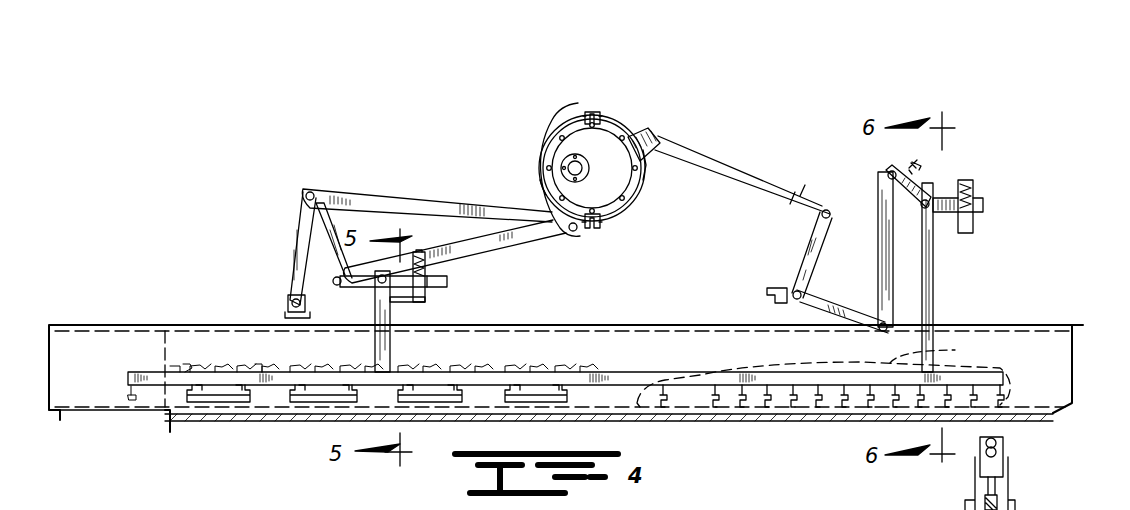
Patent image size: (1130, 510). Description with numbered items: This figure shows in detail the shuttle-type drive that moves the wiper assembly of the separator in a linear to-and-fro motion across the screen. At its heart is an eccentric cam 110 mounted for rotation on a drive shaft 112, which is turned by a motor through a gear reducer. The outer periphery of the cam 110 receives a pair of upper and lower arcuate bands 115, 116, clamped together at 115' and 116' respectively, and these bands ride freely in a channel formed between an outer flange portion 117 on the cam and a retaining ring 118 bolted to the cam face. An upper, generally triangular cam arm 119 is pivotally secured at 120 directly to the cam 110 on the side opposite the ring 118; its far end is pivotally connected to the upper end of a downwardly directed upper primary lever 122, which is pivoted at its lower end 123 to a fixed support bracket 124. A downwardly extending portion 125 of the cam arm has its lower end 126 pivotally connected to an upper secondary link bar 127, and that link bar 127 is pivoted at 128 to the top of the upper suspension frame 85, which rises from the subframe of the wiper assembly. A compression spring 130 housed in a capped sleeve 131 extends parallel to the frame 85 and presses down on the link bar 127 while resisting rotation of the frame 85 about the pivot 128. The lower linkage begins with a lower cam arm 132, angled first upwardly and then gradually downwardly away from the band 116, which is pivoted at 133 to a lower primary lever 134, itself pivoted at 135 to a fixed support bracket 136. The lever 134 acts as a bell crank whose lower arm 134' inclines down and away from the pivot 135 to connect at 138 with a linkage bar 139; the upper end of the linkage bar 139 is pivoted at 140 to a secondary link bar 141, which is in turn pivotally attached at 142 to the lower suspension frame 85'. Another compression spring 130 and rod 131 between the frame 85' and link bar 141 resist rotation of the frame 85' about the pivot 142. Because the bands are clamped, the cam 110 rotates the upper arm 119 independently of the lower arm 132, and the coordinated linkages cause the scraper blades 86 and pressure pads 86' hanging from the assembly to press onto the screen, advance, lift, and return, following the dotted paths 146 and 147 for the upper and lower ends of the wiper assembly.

The upper suspension frame 85 is at (565, 368).
The lower suspension frame 85' is at (967, 231).
The scraper blades 86 is at (832, 418).
The pressure pads 86' is at (377, 417).
The eccentric cam 110 is at (640, 205).
The drive shaft 112 is at (570, 168).
The upper arcuate band 115 is at (513, 183).
The clamp of upper band 115' is at (620, 101).
The lower arcuate band 116 is at (669, 174).
The clamp of lower band 116' is at (623, 232).
The outer flange portion 117 is at (560, 118).
The retaining ring 118 is at (555, 145).
The upper cam arm 119 is at (384, 192).
The pivot of upper cam arm 120 is at (572, 232).
The upper primary lever 122 is at (293, 240).
The lower end pivot of upper primary lever 123 is at (292, 298).
The fixed support bracket 124 is at (285, 315).
The downwardly extending portion of cam arm 125 is at (328, 225).
The lower end pivot of cam arm portion 126 is at (330, 280).
The upper secondary link bar 127 is at (448, 283).
The upper pivot 128 is at (378, 284).
The compression spring 130 is at (426, 262).
The capped sleeve 131 is at (426, 302).
The lower cam arm 132 is at (708, 150).
The pivot of lower cam arm 133 is at (828, 207).
The lower primary lever 134 is at (782, 255).
The lower arm of lower primary lever 134' is at (842, 302).
The pivot of lower primary lever 135 is at (792, 290).
The fixed support bracket 136 is at (766, 304).
The pivot of lower arm to linkage bar 138 is at (880, 330).
The linkage bar 139 is at (878, 256).
The pivot of linkage bar 140 is at (890, 172).
The secondary link bar 141 is at (930, 188).
The pivot of secondary link bar 142 is at (920, 208).
The path of upper end of wiper assembly 146 is at (939, 350).
The path of lower end of wiper assembly 147 is at (757, 403).